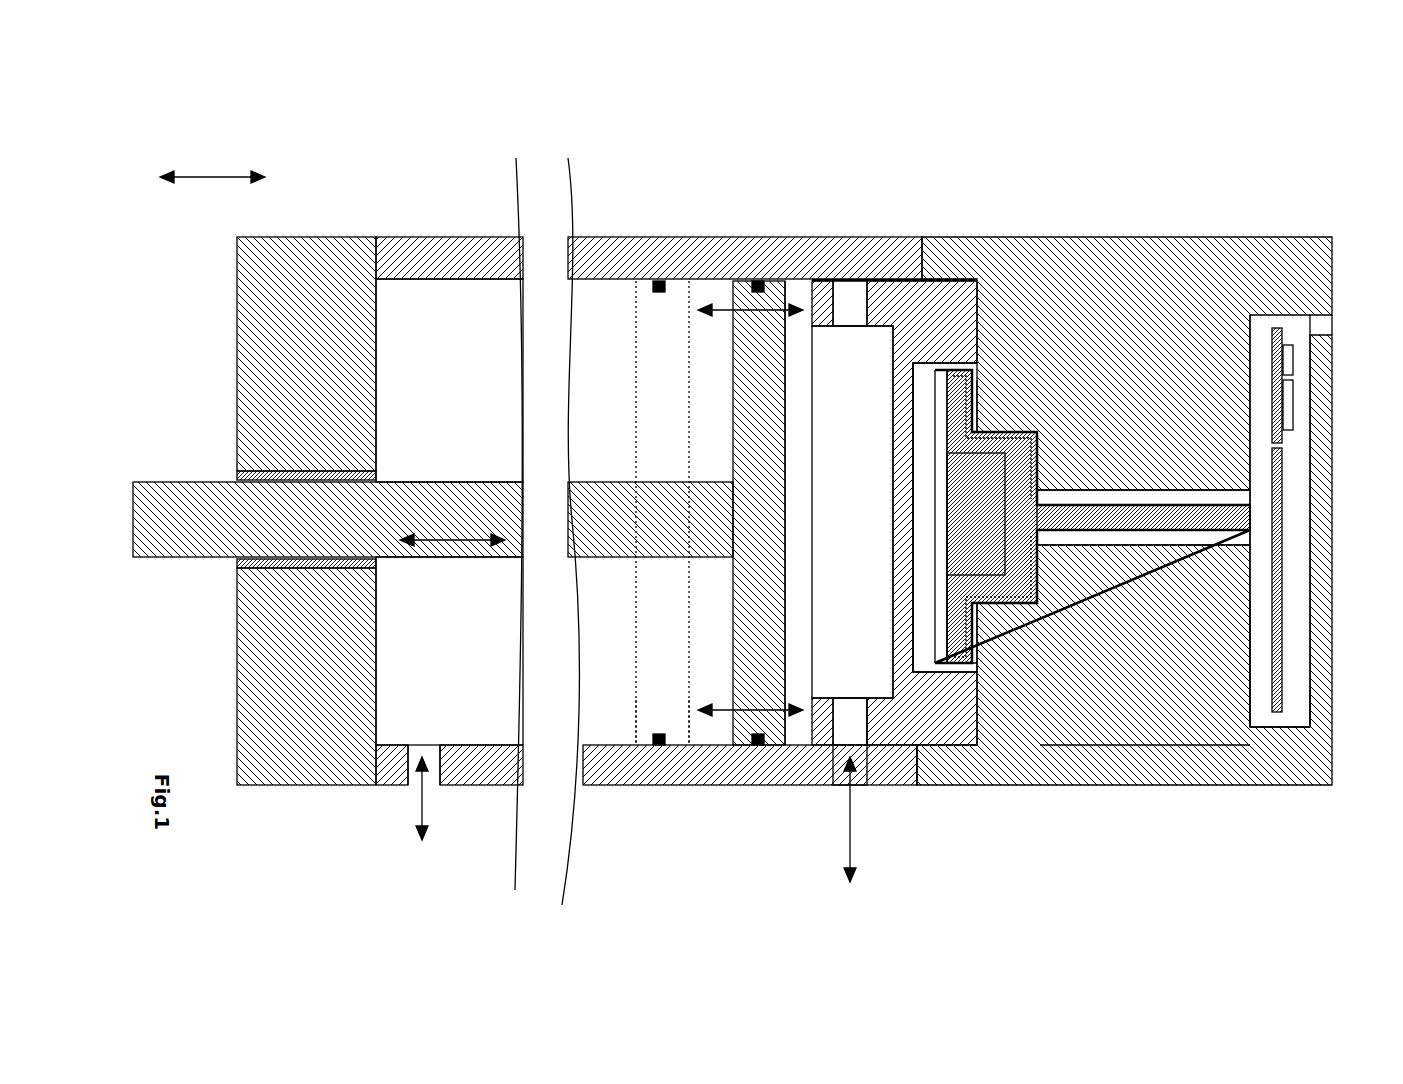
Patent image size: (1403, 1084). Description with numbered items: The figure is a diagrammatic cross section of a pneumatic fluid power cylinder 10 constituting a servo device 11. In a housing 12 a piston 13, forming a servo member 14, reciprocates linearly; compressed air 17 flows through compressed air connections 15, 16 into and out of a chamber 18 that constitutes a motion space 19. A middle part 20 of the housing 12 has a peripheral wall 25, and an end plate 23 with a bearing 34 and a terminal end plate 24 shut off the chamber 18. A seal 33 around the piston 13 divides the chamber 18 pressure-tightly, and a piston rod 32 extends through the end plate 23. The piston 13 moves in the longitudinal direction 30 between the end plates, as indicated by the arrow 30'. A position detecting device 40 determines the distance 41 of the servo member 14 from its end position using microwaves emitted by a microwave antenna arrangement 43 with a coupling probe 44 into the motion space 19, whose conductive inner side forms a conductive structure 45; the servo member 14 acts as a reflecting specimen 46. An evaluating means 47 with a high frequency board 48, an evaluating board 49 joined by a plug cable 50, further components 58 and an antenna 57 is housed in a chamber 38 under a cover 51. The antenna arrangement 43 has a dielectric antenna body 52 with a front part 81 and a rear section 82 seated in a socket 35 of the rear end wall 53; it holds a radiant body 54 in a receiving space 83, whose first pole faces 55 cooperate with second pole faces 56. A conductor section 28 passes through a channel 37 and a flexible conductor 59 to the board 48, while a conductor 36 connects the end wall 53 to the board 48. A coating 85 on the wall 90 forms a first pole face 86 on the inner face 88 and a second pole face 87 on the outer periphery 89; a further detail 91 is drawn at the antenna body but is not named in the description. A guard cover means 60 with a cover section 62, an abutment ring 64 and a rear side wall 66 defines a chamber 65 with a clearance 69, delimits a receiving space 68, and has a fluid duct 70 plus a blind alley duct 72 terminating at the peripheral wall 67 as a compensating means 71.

The pneumatic fluid power cylinder 10 is at (1183, 185).
The servo device 11 is at (1280, 200).
The housing 12 is at (768, 236).
The piston 13 is at (700, 745).
The servo member 14 is at (662, 722).
The compressed air connection 15 is at (432, 792).
The compressed air connection 16 is at (862, 792).
The compressed air 17 is at (412, 800).
The chamber 18 is at (414, 308).
The motion space 19 is at (589, 639).
The middle part 20 is at (608, 282).
The end plate 23 is at (337, 231).
The terminal end plate 24 is at (1168, 230).
The peripheral wall 25 is at (843, 280).
The conductor section 28 is at (1198, 512).
The longitudinal direction 30 is at (212, 209).
The arrow 30' is at (452, 571).
The piston rod 32 is at (610, 482).
The seal 33 is at (758, 745).
The bearing 34 is at (237, 471).
The socket 35 is at (997, 606).
The conductor 36 is at (1265, 566).
The channel 37 is at (1158, 546).
The chamber 38 is at (1304, 740).
The position detecting device 40 is at (1240, 712).
The distance 41 is at (712, 312).
The microwave antenna arrangement 43 is at (1080, 381).
The coupling probe 44 is at (935, 500).
The conductive structure 45 is at (716, 277).
The specimen 46 is at (778, 447).
The evaluating means 47 is at (1256, 395).
The high frequency board 48 is at (1282, 605).
The evaluating board 49 is at (1246, 300).
The plug cable 50 is at (1284, 444).
The cover 51 is at (1330, 682).
The antenna body 52 is at (983, 603).
The rear end wall 53 is at (1100, 786).
The radiant body 54 is at (985, 432).
The first pole faces 55 is at (950, 555).
The second pole faces 56 is at (612, 282).
The antenna 57 is at (1322, 334).
The components 58 is at (1012, 275).
The conductor 59 is at (1262, 513).
The guard cover means 60 is at (898, 294).
The cover section 62 is at (898, 428).
The abutment ring 64 is at (828, 700).
The chamber 65 is at (920, 388).
The rear side wall 66 is at (960, 790).
The peripheral wall 67 is at (968, 250).
The receiving space 68 is at (818, 584).
The clearance 69 is at (978, 670).
The fluid duct 70 is at (870, 732).
The compensating means 71 is at (845, 288).
The blind alley duct 72 is at (868, 282).
The front part 81 is at (962, 383).
The rear section 82 is at (1035, 473).
The receiving space 83 is at (1038, 555).
The electrically conductive coating 85 is at (1035, 458).
The first pole face 86 is at (935, 455).
The second pole face 87 is at (1048, 600).
The inner face 88 is at (995, 496).
The outer periphery 89 is at (1045, 622).
The wall 90 is at (1042, 545).
The surface 91 is at (978, 428).